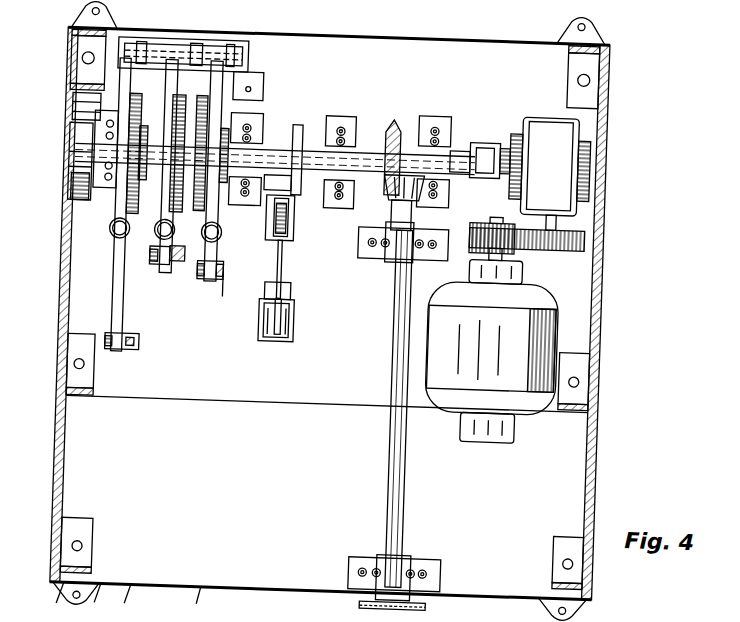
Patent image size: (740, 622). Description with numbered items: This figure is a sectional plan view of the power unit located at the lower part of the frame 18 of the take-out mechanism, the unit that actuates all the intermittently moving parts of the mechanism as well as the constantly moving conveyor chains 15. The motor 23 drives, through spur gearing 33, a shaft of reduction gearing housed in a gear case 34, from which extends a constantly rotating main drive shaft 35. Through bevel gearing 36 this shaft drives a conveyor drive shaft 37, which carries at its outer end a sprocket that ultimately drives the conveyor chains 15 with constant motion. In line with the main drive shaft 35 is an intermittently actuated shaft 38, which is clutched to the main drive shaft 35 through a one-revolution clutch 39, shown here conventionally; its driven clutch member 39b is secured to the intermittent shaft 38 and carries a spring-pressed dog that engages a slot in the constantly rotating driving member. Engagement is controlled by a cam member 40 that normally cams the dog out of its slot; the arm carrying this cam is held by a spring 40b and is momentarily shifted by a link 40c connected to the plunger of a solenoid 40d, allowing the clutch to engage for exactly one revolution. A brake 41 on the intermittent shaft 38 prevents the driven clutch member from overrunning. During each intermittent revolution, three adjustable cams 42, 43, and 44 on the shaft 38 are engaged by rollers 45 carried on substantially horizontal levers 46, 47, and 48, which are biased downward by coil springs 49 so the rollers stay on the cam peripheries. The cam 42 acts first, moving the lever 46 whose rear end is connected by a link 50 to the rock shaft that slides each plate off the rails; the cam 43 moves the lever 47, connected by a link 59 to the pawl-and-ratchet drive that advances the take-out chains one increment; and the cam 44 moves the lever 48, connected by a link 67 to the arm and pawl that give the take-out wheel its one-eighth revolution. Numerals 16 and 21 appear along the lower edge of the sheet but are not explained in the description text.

The frame 18 is at (598, 470).
The brake 41 is at (66, 112).
The intermittently actuated shaft 38 is at (66, 150).
The cam 42 is at (200, 150).
The rollers 45 is at (136, 160).
The lever 48 is at (123, 290).
The lever 47 is at (166, 270).
The lever 46 is at (216, 253).
The cam 44 is at (127, 238).
The cam 43 is at (172, 238).
The coil springs 49 is at (219, 238).
The link 59 is at (178, 266).
The link 50 is at (228, 300).
The link 67 is at (124, 356).
The clutch 39 is at (322, 114).
The driven clutch member 39b is at (290, 124).
The main drive shaft 35 is at (414, 130).
The bevel gearing 36 is at (392, 118).
The conveyor drive shaft 37 is at (394, 360).
The gear case 34 is at (575, 135).
The spur gearing 33 is at (582, 236).
The motor 23 is at (556, 330).
The cam member 40 is at (291, 218).
The spring 40b is at (285, 236).
The link 40c is at (282, 270).
The solenoid 40d is at (290, 324).
The base 21 is at (47, 601).
The support 16 is at (92, 601).
The conveyor chains 15 is at (159, 603).